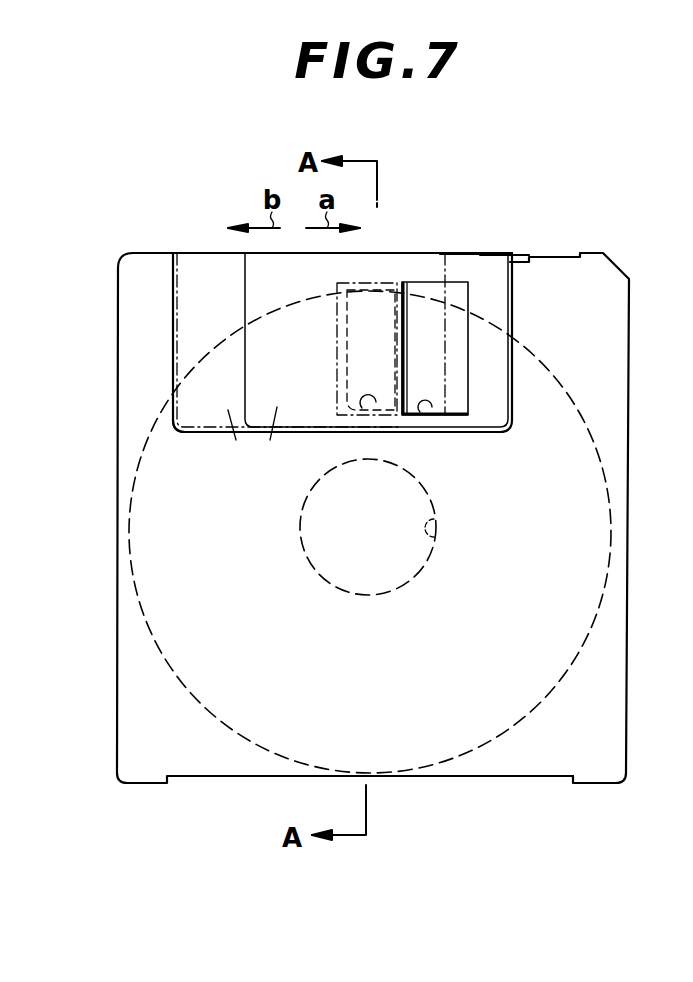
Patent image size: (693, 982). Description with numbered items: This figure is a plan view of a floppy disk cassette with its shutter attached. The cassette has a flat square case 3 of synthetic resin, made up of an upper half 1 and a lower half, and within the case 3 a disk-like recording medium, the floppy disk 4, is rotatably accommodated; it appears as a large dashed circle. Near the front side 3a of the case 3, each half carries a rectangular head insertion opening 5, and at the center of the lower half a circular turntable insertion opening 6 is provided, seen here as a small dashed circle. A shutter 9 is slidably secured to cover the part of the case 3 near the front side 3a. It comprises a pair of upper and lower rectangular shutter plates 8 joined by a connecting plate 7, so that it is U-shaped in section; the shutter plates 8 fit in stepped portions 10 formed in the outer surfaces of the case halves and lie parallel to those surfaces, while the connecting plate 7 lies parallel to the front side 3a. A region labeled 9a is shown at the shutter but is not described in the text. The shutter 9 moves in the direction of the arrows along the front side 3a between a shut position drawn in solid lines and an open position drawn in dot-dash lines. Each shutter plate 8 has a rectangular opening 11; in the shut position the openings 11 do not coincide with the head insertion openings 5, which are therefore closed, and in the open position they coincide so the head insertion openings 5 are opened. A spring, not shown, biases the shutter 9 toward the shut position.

The upper half 1 is at (600, 713).
The case 3 is at (182, 788).
The front side 3a is at (157, 253).
The floppy disk 4 is at (478, 745).
The head insertion opening 5 is at (348, 322).
The turntable insertion opening 6 is at (432, 540).
The connecting plate 7 is at (385, 252).
The shutter plate 8 is at (236, 440).
The shutter 9 is at (478, 247).
The shutter guide edge 9a is at (465, 252).
The stepped portion 10 is at (175, 407).
The rectangular opening 11 is at (372, 402).